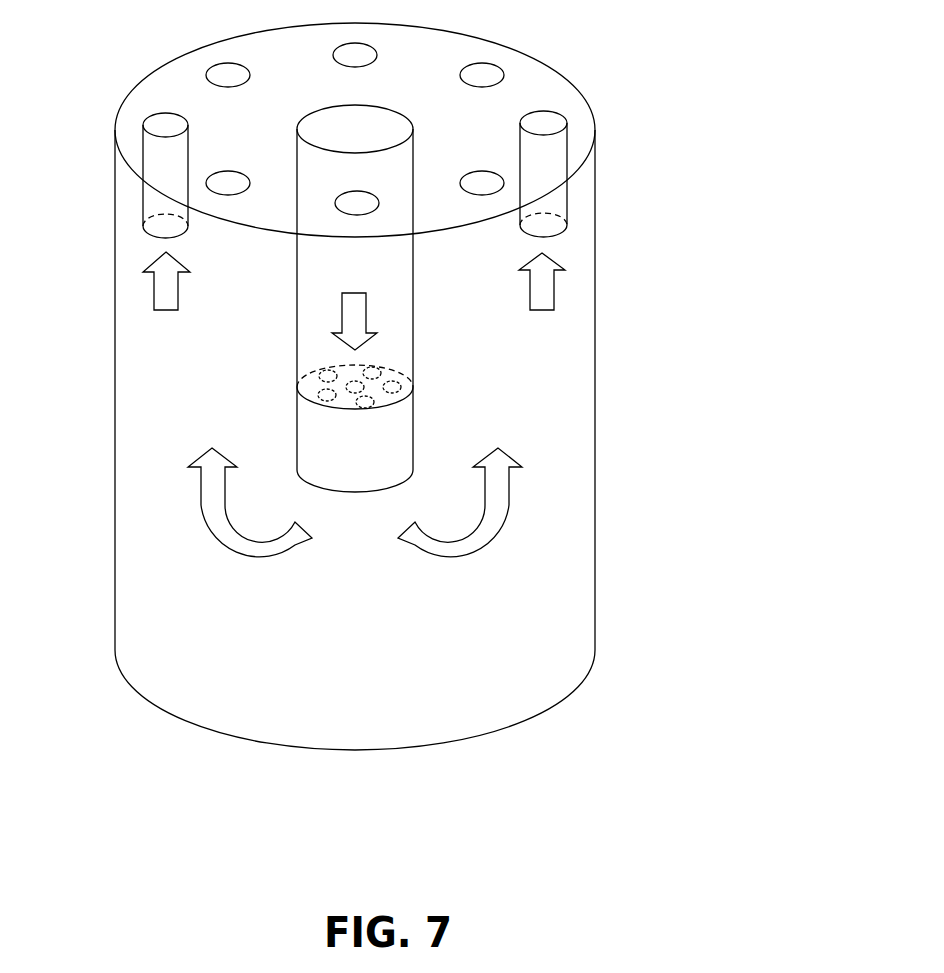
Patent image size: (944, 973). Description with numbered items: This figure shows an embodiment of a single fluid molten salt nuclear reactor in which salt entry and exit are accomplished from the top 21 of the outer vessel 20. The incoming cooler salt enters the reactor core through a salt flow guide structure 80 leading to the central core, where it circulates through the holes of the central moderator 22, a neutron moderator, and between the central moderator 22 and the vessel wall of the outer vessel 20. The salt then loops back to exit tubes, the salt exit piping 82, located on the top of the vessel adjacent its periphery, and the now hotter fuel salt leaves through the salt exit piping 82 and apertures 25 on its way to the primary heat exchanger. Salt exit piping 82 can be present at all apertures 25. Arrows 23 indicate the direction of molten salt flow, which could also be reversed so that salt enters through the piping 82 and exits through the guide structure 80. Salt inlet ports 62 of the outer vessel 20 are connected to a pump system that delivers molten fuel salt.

The outer vessel 20 is at (108, 258).
The top of the outer vessel 21 is at (180, 88).
The central moderator 22 is at (297, 430).
The arrows 23 is at (175, 300).
The apertures 25 is at (342, 200).
The salt inlet ports 62 is at (355, 719).
The salt flow guide structure 80 is at (413, 338).
The salt exit piping 82 is at (143, 213).